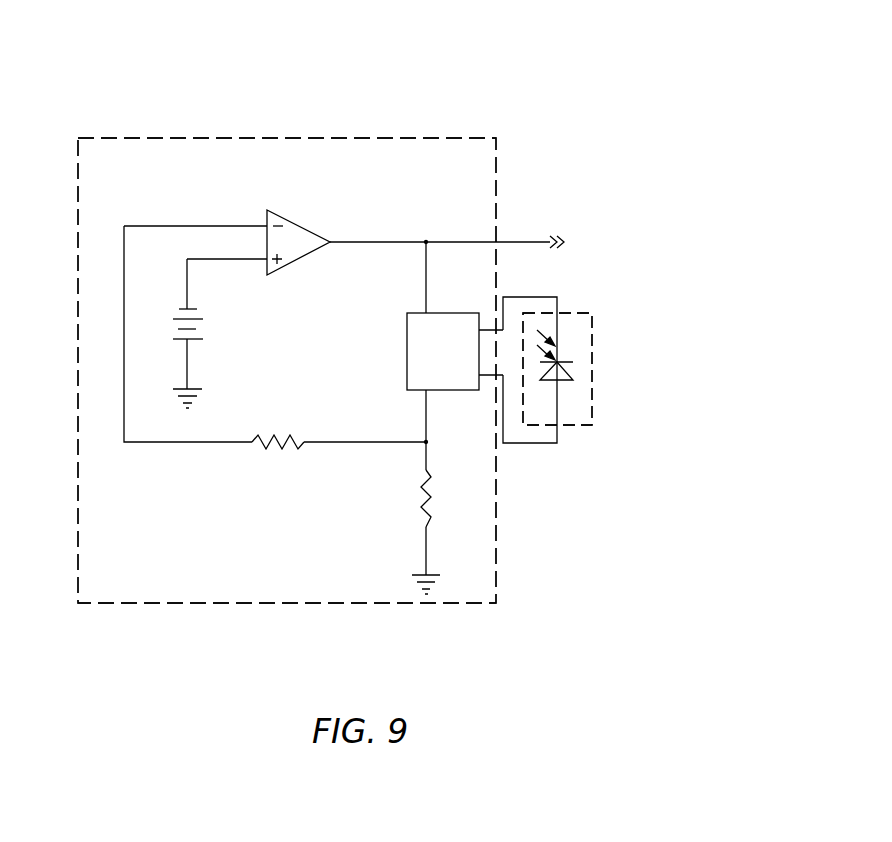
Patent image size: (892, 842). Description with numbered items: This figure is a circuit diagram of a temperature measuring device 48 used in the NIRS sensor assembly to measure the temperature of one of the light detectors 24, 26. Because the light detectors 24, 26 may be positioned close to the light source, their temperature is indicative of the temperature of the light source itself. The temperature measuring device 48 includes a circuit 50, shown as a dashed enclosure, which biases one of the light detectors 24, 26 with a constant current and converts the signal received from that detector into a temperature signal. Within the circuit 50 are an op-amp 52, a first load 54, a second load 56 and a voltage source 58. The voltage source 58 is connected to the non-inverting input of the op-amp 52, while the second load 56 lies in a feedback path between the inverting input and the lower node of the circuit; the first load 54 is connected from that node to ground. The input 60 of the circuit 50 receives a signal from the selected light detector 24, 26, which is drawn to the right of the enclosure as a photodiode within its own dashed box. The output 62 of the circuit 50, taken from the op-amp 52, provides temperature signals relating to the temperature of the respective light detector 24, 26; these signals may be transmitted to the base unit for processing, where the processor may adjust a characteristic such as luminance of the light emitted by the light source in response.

The temperature measuring device 48 is at (292, 93).
The circuit 50 is at (331, 139).
The op-amp 52 is at (297, 222).
The first load 54 is at (440, 510).
The second load 56 is at (282, 455).
The voltage source 58 is at (212, 330).
The input 60 is at (426, 442).
The output 62 is at (427, 241).
The light detector 24 is at (598, 350).
The light detector 26 is at (557, 369).